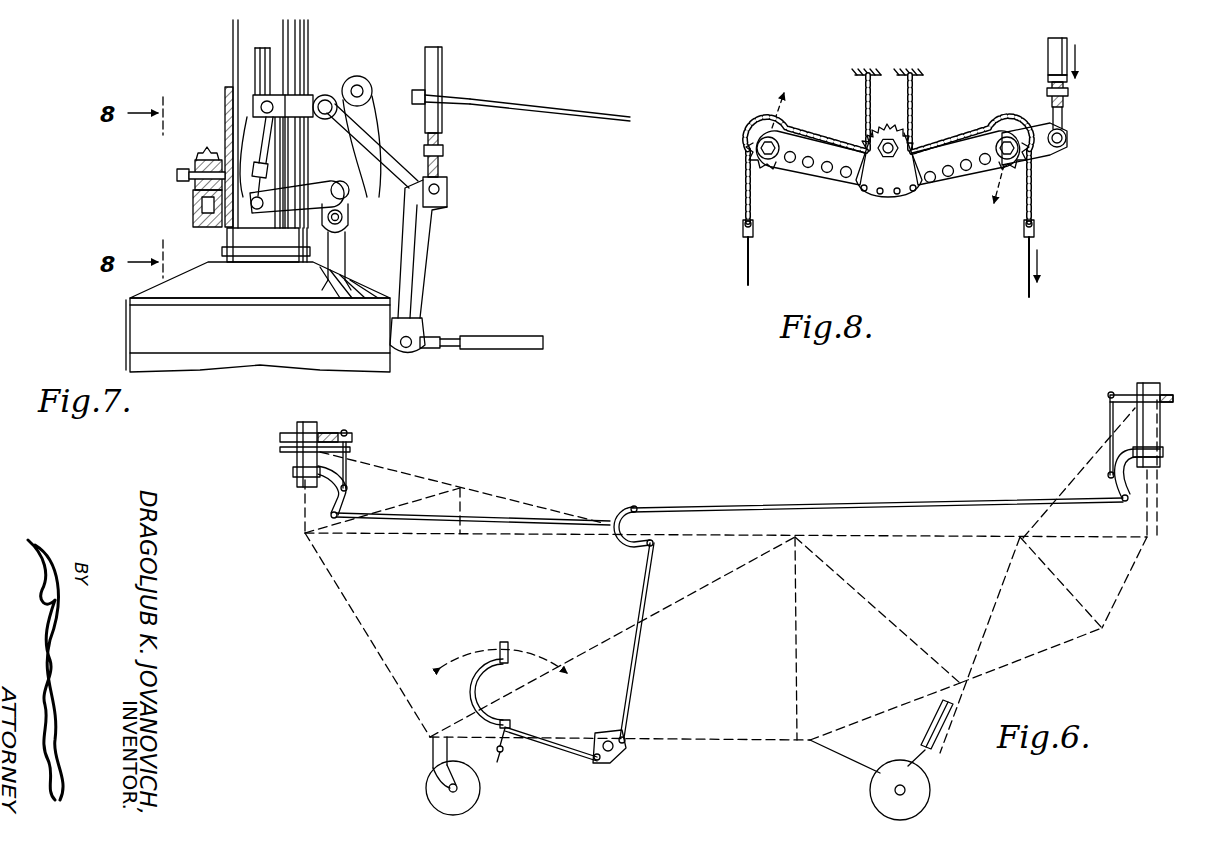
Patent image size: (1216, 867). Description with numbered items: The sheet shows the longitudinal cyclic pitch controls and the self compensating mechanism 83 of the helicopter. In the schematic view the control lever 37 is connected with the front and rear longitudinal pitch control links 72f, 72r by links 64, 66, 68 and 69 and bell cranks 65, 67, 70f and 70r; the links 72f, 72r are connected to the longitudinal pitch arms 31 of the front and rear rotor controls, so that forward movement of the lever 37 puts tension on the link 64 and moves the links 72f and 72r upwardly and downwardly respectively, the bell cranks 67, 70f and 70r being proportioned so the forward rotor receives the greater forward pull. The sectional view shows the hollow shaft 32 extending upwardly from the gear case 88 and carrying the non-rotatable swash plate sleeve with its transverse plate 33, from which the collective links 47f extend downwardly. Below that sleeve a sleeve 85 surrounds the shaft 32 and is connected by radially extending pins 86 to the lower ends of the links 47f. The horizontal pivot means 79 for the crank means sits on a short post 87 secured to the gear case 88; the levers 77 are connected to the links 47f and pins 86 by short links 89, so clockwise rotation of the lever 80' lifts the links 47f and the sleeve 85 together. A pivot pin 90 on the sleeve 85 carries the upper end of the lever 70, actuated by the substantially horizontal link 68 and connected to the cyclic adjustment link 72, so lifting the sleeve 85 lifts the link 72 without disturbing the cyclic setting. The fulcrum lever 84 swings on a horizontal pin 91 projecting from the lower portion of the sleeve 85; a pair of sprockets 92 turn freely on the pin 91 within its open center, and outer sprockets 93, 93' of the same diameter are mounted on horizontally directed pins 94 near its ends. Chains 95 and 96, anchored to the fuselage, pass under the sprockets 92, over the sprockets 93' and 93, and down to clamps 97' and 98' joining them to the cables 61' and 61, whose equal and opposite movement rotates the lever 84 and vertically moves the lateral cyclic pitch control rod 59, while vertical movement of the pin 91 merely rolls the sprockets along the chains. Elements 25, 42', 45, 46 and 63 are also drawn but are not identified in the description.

In FIG. 6, the hydraulic cylinder 25 is at (282, 436).
In FIG. 6, the longitudinal pitch arm 31 is at (343, 433).
In FIG. 7, the hollow shaft 32 is at (238, 57).
In FIG. 6, the transverse plate 33 is at (283, 450).
In FIG. 6, the control lever 37 is at (510, 646).
In FIG. 7, the control rod 42' is at (521, 96).
In FIG. 7, the lever arm 45 is at (375, 80).
In FIG. 6, the slide block 46 is at (504, 718).
In FIG. 7, the collective pitch adjustment link 47f is at (268, 56).
In FIG. 8, the lateral cyclic pitch control rod 59 is at (1048, 53).
In FIG. 8, the cable 61 is at (1005, 267).
In FIG. 8, the cable 61' is at (772, 261).
In FIG. 6, the pendant pin 63 is at (498, 762).
In FIG. 6, the link 64 is at (555, 748).
In FIG. 6, the bell crank 65 is at (620, 752).
In FIG. 6, the link 66 is at (653, 578).
In FIG. 6, the bell crank 67 is at (612, 533).
In FIG. 7, the link 68 is at (517, 337).
In FIG. 6, the link 68 is at (518, 524).
In FIG. 6, the link 69 is at (858, 503).
In FIG. 7, the bell crank lever 70 is at (420, 230).
In FIG. 6, the front bell crank 70f is at (342, 505).
In FIG. 6, the rear bell crank 70r is at (1135, 488).
In FIG. 7, the cyclic adjustment link 72 is at (442, 72).
In FIG. 6, the front longitudinal pitch control link 72f is at (352, 470).
In FIG. 6, the rear longitudinal pitch control link 72r is at (1108, 420).
In FIG. 7, the lever of crank means 77 is at (308, 186).
In FIG. 7, the horizontal pivot means 79 is at (348, 219).
In FIG. 7, the lever of crank means 80' is at (372, 136).
In FIG. 7, the self compensating mechanism 83 is at (155, 212).
In FIG. 8, the self compensating mechanism 83 is at (964, 119).
In FIG. 7, the fulcrum lever 84 is at (212, 228).
In FIG. 8, the fulcrum lever 84 is at (858, 190).
In FIG. 7, the sleeve 85 is at (298, 82).
In FIG. 7, the radially extending pin 86 is at (255, 107).
In FIG. 7, the short post 87 is at (346, 253).
In FIG. 7, the gear case 88 is at (130, 333).
In FIG. 7, the short link 89 is at (262, 138).
In FIG. 7, the pivot pin 90 is at (330, 100).
In FIG. 7, the horizontal pin 91 is at (177, 175).
In FIG. 8, the horizontal pin 91 is at (899, 148).
In FIG. 7, the central sprocket 92 is at (205, 157).
In FIG. 8, the central sprocket 92 is at (885, 127).
In FIG. 8, the outer sprocket 93 is at (970, 169).
In FIG. 8, the outer sprocket 93' is at (806, 171).
In FIG. 8, the horizontally directed pin 94 is at (774, 146).
In FIG. 8, the chain 95 is at (914, 108).
In FIG. 8, the chain 96 is at (866, 93).
In FIG. 8, the clamp 97' is at (771, 232).
In FIG. 8, the clamp 98' is at (1052, 232).